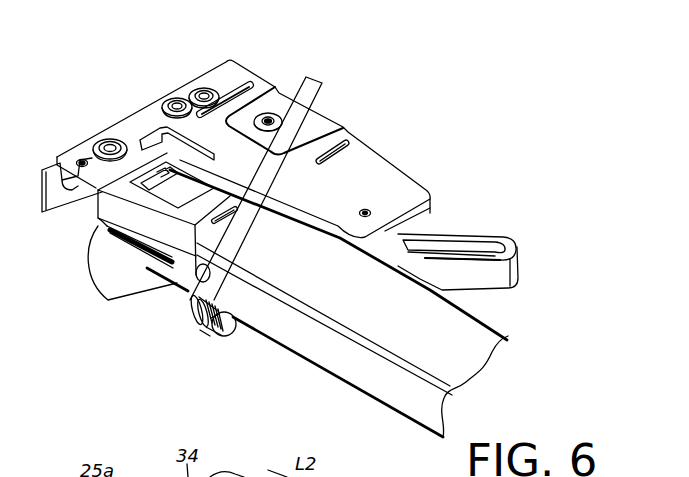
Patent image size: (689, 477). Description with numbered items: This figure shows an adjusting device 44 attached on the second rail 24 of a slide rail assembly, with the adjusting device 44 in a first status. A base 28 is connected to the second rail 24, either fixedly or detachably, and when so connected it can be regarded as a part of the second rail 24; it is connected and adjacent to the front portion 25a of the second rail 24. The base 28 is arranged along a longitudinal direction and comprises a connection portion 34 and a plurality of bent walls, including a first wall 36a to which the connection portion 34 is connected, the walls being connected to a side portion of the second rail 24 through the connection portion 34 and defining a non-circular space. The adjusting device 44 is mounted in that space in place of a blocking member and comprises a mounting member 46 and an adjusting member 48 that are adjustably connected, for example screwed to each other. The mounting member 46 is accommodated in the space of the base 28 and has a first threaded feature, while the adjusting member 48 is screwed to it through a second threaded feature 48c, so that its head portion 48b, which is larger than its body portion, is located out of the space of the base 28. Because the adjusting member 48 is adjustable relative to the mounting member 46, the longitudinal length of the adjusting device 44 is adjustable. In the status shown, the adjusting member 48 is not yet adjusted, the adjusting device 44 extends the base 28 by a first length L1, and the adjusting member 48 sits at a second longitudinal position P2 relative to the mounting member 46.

The second rail 24 is at (506, 340).
The front portion 25a is at (153, 143).
The base 28 is at (90, 275).
The connection portion 34 is at (203, 264).
The first wall 36a is at (128, 280).
The adjusting device 44 is at (205, 341).
The mounting member 46 is at (184, 323).
The adjusting member 48 is at (225, 340).
The head portion 48b is at (234, 321).
The second threaded feature 48c is at (150, 262).
The first length L1 is at (283, 76).
The second longitudinal position P2 is at (210, 327).